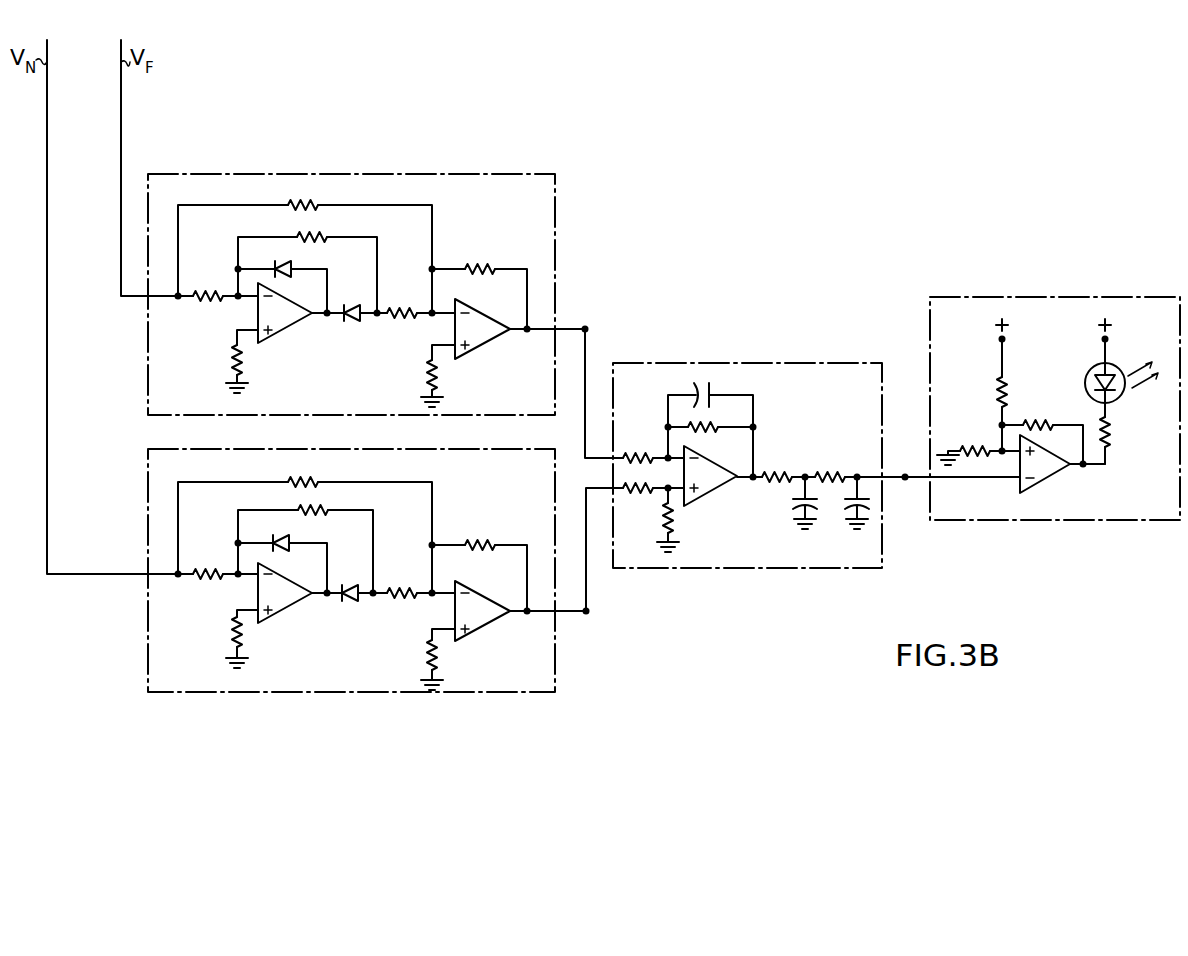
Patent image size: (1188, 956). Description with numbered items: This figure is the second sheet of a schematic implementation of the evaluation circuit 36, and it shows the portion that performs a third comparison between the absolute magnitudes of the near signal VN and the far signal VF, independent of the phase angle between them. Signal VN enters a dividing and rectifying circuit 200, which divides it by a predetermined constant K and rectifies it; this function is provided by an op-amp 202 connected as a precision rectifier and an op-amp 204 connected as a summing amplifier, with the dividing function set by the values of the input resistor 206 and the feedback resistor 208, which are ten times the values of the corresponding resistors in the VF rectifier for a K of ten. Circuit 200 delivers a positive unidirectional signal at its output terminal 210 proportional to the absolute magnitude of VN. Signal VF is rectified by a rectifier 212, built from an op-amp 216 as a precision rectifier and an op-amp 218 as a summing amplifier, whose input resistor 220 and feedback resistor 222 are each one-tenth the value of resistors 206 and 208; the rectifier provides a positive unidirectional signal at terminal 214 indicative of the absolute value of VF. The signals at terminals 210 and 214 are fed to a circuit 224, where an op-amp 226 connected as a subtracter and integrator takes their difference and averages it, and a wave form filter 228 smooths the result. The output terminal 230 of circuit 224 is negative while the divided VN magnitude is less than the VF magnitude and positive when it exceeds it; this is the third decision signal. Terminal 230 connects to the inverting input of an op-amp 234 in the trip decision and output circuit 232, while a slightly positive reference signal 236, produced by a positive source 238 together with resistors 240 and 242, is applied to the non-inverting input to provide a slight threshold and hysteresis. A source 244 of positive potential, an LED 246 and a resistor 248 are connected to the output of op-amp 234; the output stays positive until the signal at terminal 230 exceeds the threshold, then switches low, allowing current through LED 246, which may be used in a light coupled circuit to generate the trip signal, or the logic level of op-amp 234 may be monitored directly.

The evaluation circuit 36 is at (716, 643).
The dividing and rectifying circuit 200 is at (190, 692).
The op-amp 202 is at (286, 610).
The op-amp 204 is at (482, 630).
The input resistor 206 is at (208, 571).
The feedback resistor 208 is at (301, 479).
The output terminal 210 is at (590, 616).
The rectifier 212 is at (208, 174).
The terminal 214 is at (585, 329).
The op-amp 216 is at (284, 333).
The op-amp 218 is at (482, 346).
The input resistor 220 is at (222, 272).
The feedback resistor 222 is at (300, 203).
The subtracting and averaging circuit 224 is at (808, 346).
The op-amp 226 is at (713, 497).
The wave form filter 228 is at (848, 467).
The output terminal 230 is at (905, 477).
The trip decision and output circuit 232 is at (989, 297).
The op-amp 234 is at (1047, 483).
The reference signal junction 236 is at (1003, 424).
The positive source of unidirectional potential 238 is at (1000, 339).
The resistor 240 is at (994, 397).
The resistor 242 is at (986, 445).
The source of positive potential 244 is at (1110, 340).
The LED 246 is at (1083, 376).
The resistor 248 is at (1111, 430).